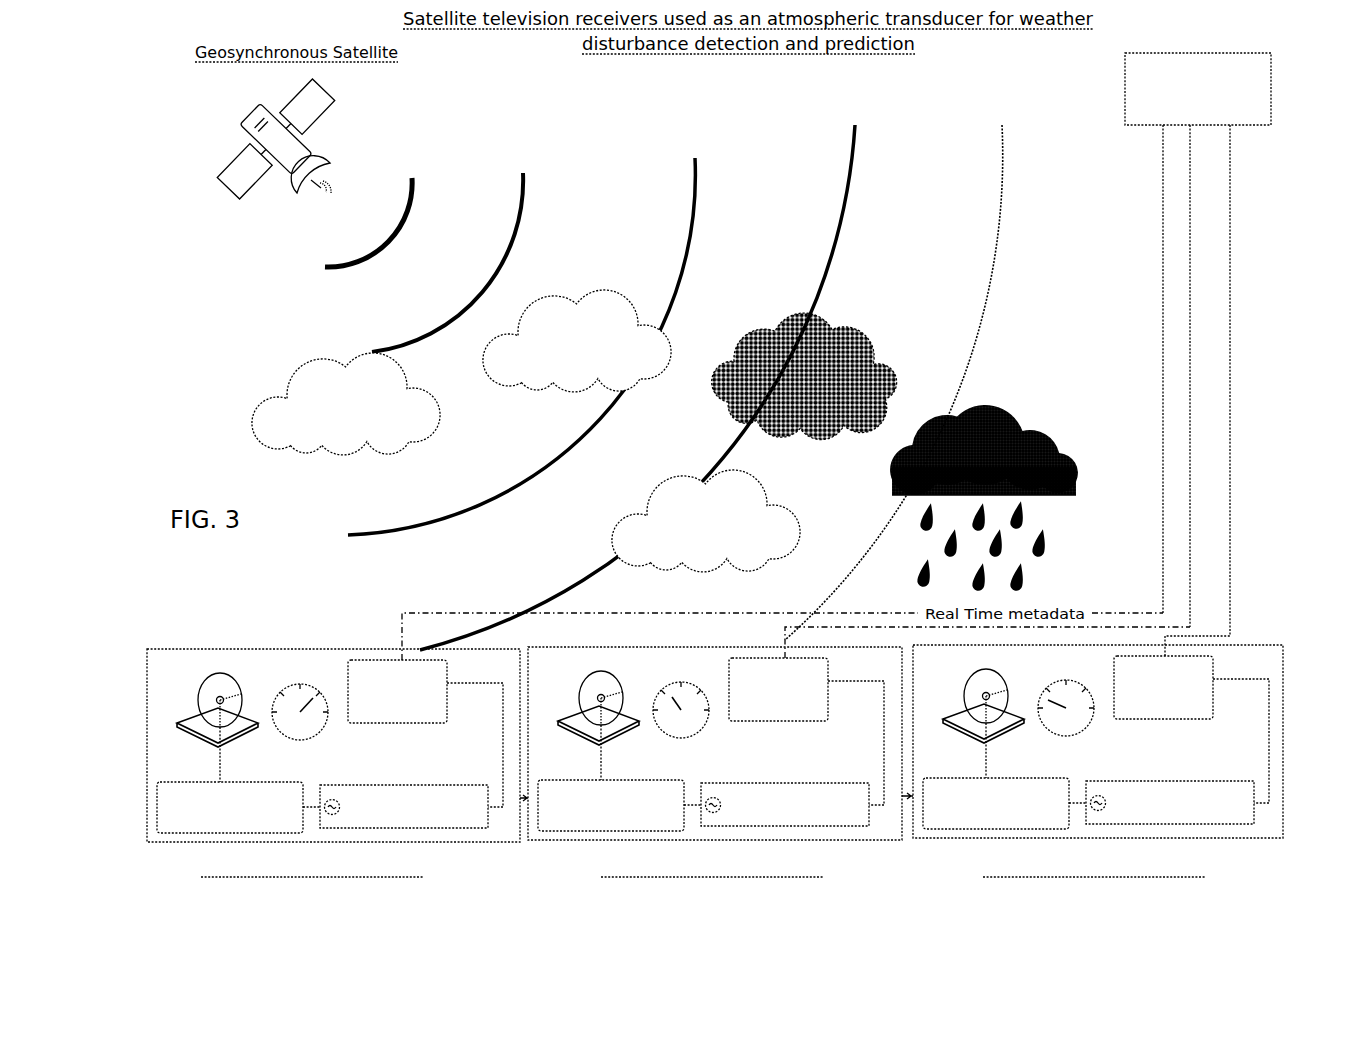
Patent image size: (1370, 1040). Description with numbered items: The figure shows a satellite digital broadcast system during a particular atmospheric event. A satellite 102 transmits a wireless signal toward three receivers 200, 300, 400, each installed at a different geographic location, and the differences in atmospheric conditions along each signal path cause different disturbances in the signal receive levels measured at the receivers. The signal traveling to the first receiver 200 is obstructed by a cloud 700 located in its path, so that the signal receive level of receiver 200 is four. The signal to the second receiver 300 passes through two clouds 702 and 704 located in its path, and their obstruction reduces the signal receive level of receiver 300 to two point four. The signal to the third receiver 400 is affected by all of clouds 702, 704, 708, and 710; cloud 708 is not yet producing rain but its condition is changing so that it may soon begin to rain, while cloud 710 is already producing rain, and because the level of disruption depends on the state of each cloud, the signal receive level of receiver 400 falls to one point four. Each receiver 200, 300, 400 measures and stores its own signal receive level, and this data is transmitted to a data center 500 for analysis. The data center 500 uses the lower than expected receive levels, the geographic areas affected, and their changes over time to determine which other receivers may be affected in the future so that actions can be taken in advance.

The satellite 102 is at (334, 101).
The receiver 200 is at (228, 648).
The receiver 300 is at (600, 647).
The receiver 400 is at (946, 649).
The data center 500 is at (1193, 52).
The cloud 700 is at (346, 404).
The cloud 702 is at (577, 341).
The cloud 704 is at (706, 521).
The cloud 708 is at (852, 340).
The cloud 710 is at (1005, 418).